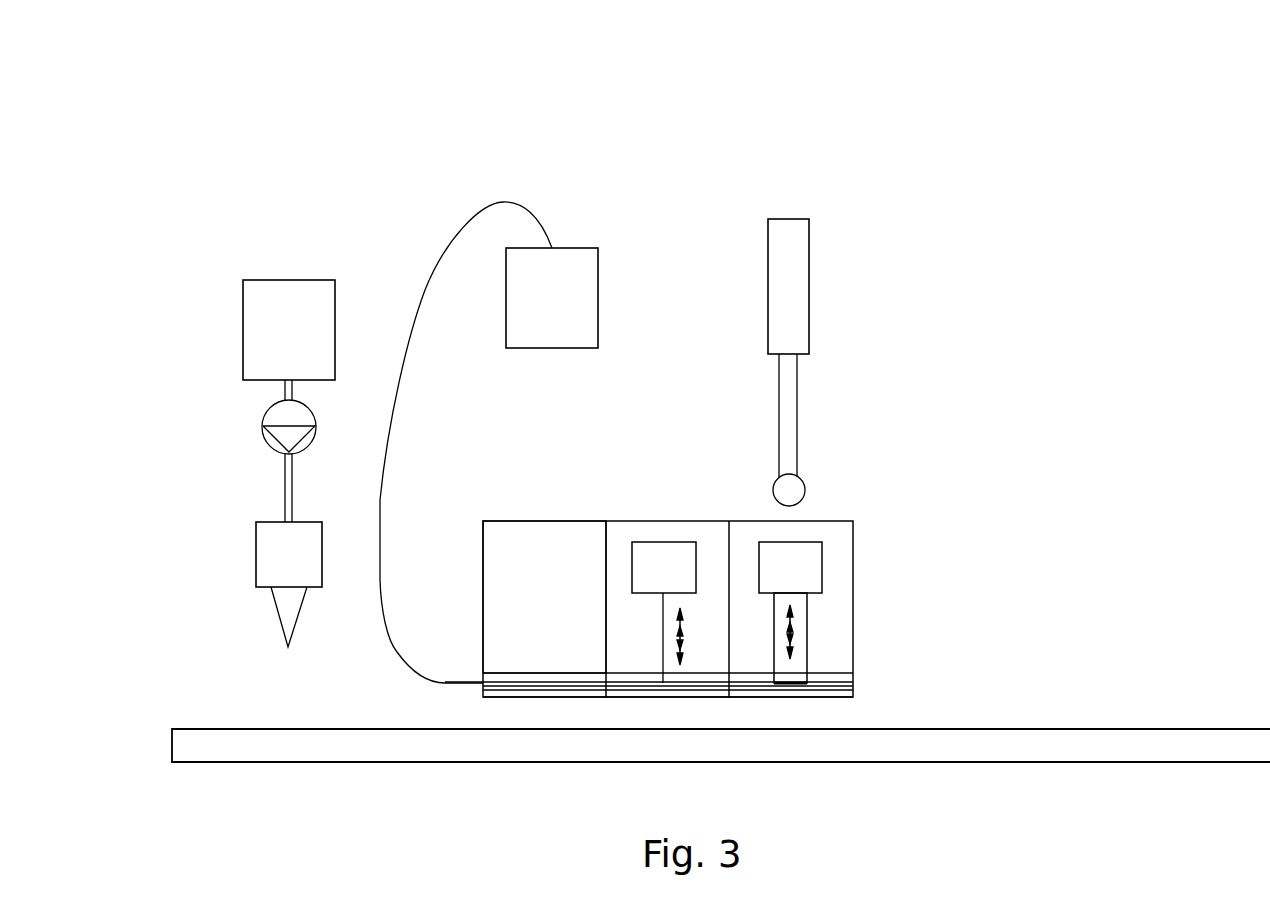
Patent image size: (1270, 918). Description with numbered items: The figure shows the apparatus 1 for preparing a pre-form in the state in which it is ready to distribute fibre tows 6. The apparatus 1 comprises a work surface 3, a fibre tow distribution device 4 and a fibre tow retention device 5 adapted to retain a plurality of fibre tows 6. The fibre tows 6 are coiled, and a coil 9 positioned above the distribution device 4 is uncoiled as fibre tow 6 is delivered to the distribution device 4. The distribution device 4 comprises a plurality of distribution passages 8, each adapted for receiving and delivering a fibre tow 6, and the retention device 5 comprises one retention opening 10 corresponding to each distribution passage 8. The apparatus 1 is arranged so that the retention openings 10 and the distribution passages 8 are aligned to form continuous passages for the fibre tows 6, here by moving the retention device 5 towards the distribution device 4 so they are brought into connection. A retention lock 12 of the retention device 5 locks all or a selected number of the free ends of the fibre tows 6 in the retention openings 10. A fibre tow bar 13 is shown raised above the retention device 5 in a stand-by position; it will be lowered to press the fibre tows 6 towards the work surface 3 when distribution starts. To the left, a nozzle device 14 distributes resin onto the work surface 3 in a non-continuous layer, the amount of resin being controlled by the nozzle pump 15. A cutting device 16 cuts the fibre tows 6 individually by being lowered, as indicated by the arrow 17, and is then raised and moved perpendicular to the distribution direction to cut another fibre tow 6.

The apparatus 1 is at (1018, 203).
The work surface 3 is at (1013, 742).
The fibre tow distribution device 4 is at (514, 545).
The fibre tow retention device 5 is at (839, 578).
The fibre tow 6 is at (442, 383).
The distribution passage 8 is at (490, 680).
The coil 9 is at (572, 268).
The retention opening 10 is at (848, 677).
The retention lock 12 is at (744, 547).
The fibre tow bar 13 is at (840, 362).
The nozzle device 14 is at (238, 616).
The nozzle pump 15 is at (278, 422).
The cutting device 16 is at (620, 546).
The arrow 17 is at (680, 638).